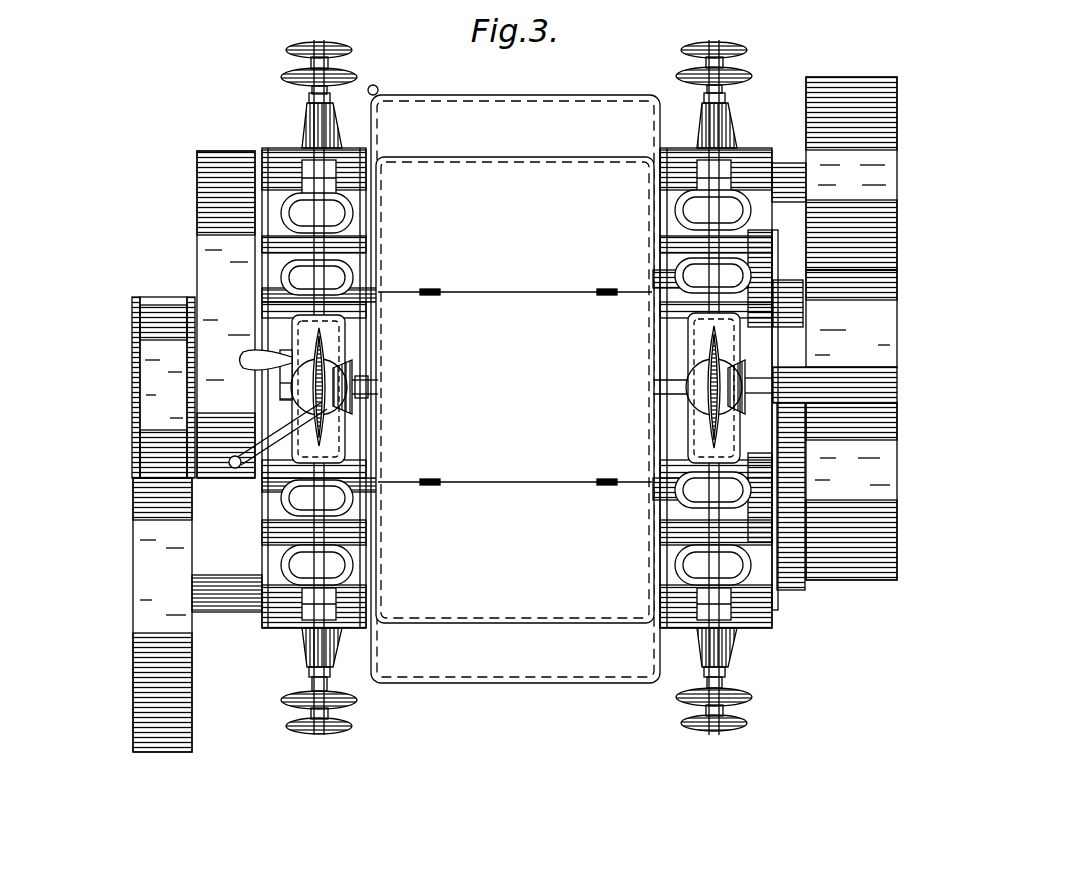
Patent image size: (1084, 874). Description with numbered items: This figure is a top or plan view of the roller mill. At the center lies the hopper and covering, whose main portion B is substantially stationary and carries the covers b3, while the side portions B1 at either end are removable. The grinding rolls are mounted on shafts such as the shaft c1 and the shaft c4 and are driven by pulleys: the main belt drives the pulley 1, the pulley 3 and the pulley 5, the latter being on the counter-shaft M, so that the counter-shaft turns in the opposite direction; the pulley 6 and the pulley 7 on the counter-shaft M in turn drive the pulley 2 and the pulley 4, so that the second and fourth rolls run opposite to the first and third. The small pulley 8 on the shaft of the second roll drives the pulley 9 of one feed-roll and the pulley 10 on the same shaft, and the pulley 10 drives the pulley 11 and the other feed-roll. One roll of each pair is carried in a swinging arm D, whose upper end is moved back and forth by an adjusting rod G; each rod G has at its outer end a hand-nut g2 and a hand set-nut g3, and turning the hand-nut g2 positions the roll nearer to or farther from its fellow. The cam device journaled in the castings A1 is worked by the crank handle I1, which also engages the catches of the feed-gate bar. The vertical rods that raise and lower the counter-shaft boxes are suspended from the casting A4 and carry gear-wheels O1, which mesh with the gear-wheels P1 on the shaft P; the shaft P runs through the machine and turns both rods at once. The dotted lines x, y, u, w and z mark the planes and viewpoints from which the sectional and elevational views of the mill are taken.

The pulley 1 is at (851, 173).
The pulley 2 is at (226, 314).
The pulley 3 is at (851, 491).
The pulley 4 is at (162, 615).
The pulley 5 is at (851, 318).
The pulley 6 is at (237, 469).
The pulley 7 is at (163, 387).
The small pulley 8 is at (788, 303).
The pulley 9 is at (791, 496).
The pulley 10 is at (712, 497).
The pulley 11 is at (712, 278).
The roll shaft c1 is at (796, 158).
The roll shaft c4 is at (227, 580).
The counter-shaft M is at (786, 372).
The hopper main portion B is at (515, 390).
The side portion B1 is at (514, 384).
The cover b3 is at (505, 391).
The adjusting rod G is at (305, 245).
The swinging arm D is at (304, 140).
The hand-nut g2 is at (284, 78).
The hand set-nut g3 is at (287, 52).
The frame casting A1 is at (752, 430).
The frame casting A4 is at (508, 383).
The gear-wheel O1 is at (516, 411).
The gear-wheel P1 is at (548, 368).
The shaft P is at (362, 389).
The crank handle I1 is at (281, 433).
The dotted line x x is at (912, 387).
The dotted line y y is at (319, 745).
The dotted line u u is at (358, 740).
The dotted line w w is at (514, 748).
The dotted line z z is at (908, 740).